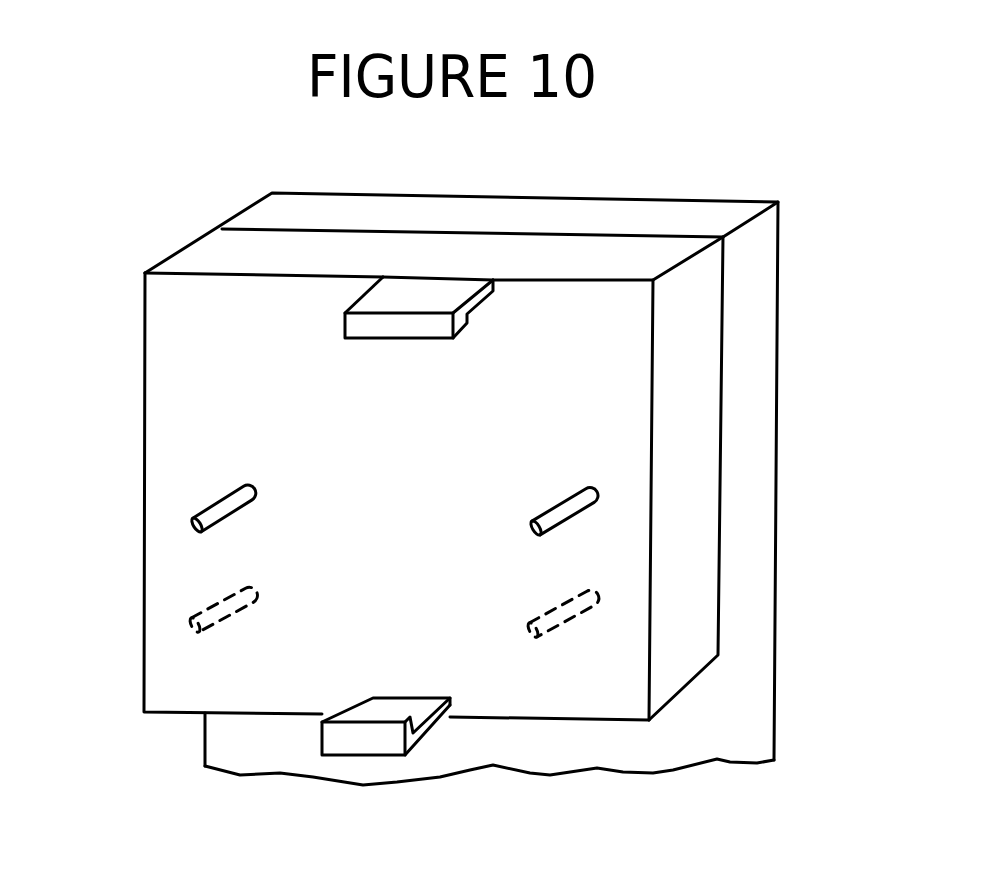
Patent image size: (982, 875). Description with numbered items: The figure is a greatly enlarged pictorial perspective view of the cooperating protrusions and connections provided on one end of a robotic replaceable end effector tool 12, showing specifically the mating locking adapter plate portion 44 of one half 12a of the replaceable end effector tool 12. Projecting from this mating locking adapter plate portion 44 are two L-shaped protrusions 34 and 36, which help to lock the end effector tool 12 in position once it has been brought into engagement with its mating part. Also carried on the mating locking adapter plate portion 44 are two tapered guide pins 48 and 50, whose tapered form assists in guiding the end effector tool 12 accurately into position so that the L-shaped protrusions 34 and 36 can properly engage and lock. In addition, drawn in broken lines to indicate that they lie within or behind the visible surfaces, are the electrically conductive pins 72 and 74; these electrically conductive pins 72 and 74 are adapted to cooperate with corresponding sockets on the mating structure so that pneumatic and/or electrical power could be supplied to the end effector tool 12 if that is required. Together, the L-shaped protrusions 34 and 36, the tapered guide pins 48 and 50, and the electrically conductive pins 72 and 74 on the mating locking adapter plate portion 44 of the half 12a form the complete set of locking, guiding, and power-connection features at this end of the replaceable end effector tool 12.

The replaceable end effector tool 12 is at (535, 195).
The half of replaceable end effector tool 12a is at (762, 277).
The L-shaped protrusion 34 is at (398, 323).
The L-shaped protrusion 36 is at (378, 735).
The mating locking adapter plate portion 44 is at (573, 312).
The tapered guide pin 48 is at (590, 497).
The tapered guide pin 50 is at (227, 500).
The electrically conductive pin 72 is at (590, 602).
The electrically conductive pin 74 is at (190, 625).